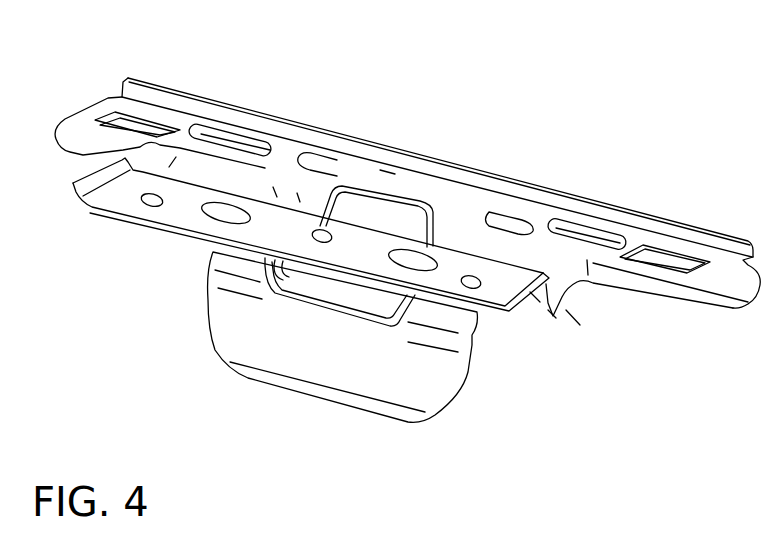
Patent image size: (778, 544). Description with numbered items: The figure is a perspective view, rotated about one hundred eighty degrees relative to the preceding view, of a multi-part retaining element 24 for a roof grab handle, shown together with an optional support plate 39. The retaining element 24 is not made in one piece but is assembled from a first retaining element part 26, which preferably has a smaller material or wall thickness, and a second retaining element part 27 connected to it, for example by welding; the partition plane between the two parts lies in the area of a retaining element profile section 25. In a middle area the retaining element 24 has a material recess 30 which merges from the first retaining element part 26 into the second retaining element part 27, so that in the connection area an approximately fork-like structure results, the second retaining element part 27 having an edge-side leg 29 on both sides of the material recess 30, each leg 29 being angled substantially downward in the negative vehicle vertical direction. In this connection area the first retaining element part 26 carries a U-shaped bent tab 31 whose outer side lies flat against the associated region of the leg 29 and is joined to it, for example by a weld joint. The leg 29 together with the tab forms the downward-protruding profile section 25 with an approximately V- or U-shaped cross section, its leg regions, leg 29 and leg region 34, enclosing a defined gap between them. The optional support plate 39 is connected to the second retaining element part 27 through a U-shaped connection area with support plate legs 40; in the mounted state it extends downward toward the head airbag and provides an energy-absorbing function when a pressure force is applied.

The retaining element 24 is at (407, 173).
The retaining element profile section 25 is at (589, 340).
The first retaining element part 26 is at (387, 175).
The second retaining element part 27 is at (316, 216).
The edge-side leg 29 is at (537, 300).
The material recess 30 is at (363, 214).
The U-shaped bent tab 31 is at (553, 317).
The leg region 34 is at (563, 291).
The support plate 39 is at (312, 355).
The support plate legs 40 is at (230, 263).